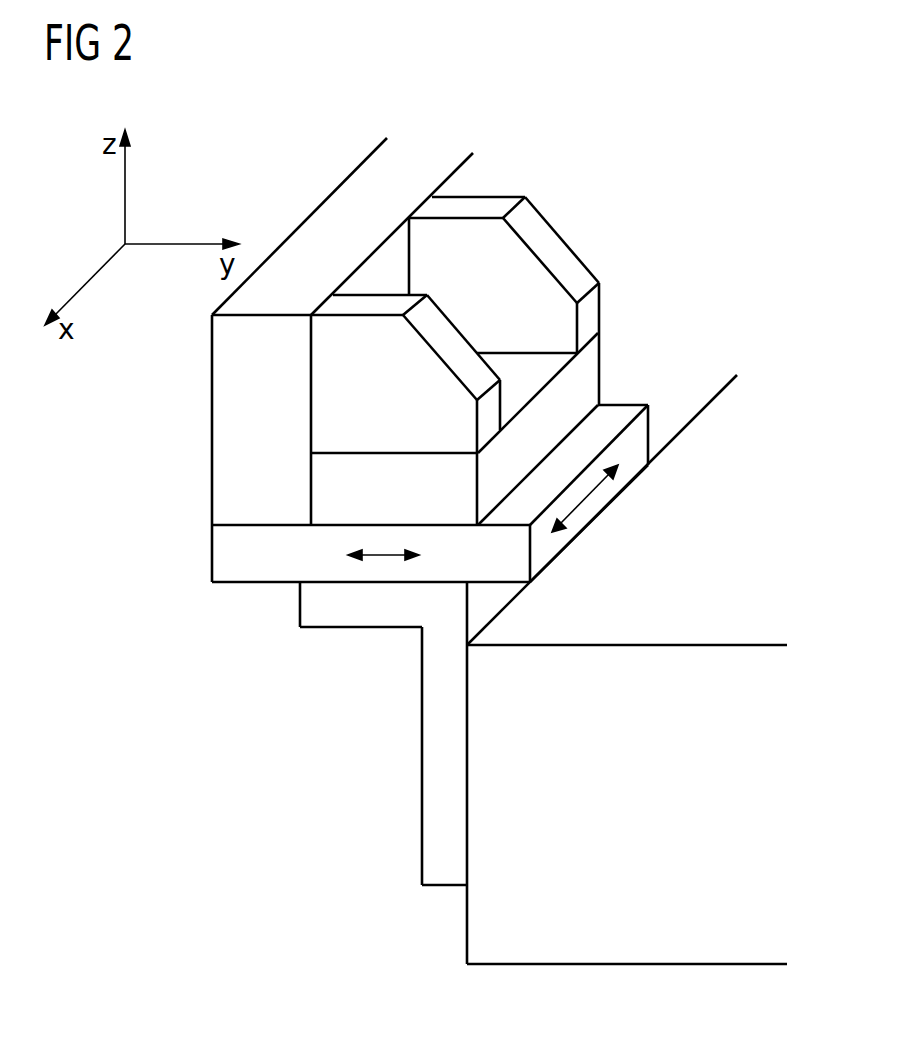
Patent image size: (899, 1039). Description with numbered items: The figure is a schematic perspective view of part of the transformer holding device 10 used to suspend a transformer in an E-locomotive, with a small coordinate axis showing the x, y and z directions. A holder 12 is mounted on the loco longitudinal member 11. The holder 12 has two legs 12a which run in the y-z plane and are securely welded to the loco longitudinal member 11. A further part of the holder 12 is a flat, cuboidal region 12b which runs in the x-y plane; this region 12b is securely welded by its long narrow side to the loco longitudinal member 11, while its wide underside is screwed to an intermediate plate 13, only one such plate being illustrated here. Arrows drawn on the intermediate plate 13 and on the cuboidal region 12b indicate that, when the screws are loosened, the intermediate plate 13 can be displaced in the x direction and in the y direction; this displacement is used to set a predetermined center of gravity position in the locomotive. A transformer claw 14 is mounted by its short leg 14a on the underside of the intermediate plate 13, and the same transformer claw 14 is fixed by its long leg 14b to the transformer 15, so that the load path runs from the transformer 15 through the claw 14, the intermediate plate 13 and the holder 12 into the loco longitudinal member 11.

The transformer holding device 10 is at (712, 164).
The loco longitudinal member 11 is at (313, 232).
The holder 12 is at (553, 246).
The leg 12a is at (500, 200).
The flat, cuboidal region 12b is at (588, 370).
The intermediate plate 13 is at (210, 554).
The transformer claw 14 is at (351, 733).
The short leg 14a is at (313, 606).
The long leg 14b is at (430, 757).
The transformer 15 is at (475, 926).